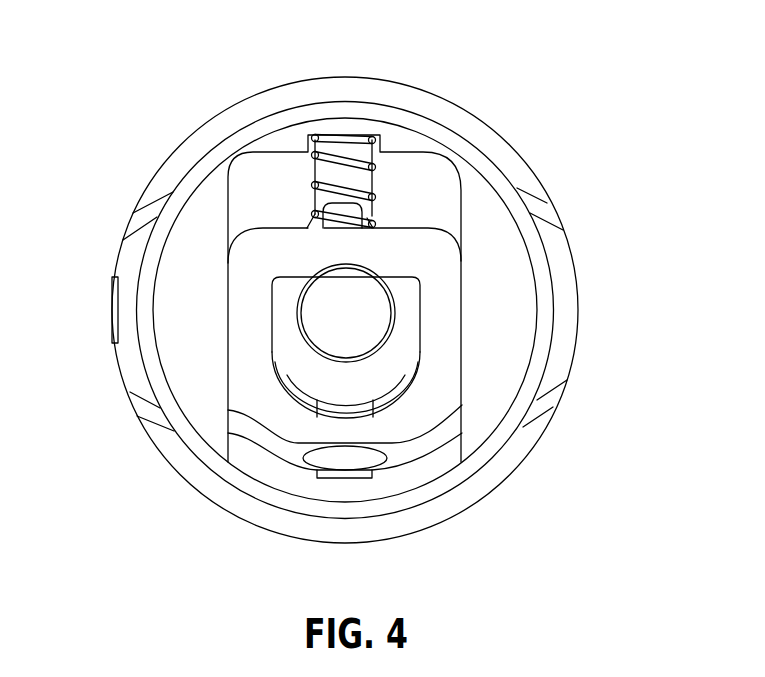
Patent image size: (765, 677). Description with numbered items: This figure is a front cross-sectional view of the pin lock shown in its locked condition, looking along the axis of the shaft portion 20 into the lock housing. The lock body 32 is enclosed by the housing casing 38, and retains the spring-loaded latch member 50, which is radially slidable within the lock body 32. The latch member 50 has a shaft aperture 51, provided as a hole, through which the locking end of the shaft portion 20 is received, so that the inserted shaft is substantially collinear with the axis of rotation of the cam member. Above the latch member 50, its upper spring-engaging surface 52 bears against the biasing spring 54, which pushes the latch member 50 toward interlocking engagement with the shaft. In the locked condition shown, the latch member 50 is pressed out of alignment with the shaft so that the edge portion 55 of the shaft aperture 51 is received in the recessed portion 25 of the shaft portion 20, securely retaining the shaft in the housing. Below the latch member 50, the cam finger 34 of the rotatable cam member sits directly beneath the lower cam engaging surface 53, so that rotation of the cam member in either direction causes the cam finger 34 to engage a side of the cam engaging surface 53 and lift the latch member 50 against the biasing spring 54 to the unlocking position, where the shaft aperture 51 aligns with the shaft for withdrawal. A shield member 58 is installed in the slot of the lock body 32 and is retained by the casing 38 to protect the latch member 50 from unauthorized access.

The shaft portion 20 is at (340, 308).
The recessed portion 25 is at (300, 317).
The lock body 32 is at (513, 313).
The cam finger 34 is at (330, 458).
The housing casing 38 is at (552, 398).
The latch member 50 is at (443, 318).
The shaft aperture 51 is at (297, 382).
The spring-engaging surface 52 is at (356, 226).
The cam engaging surface 53 is at (407, 437).
The biasing spring 54 is at (350, 157).
The edge portion 55 is at (345, 265).
The shield member 58 is at (358, 487).